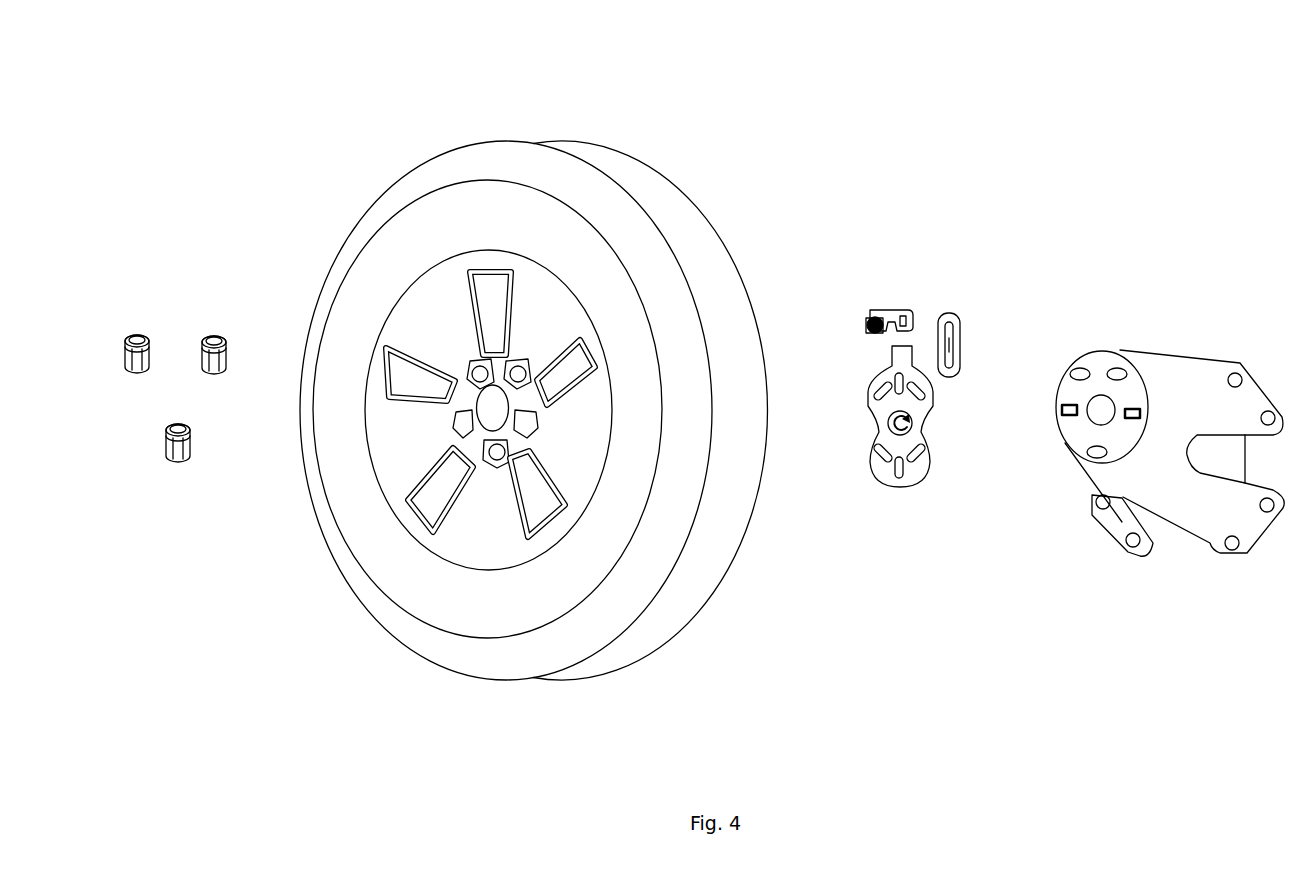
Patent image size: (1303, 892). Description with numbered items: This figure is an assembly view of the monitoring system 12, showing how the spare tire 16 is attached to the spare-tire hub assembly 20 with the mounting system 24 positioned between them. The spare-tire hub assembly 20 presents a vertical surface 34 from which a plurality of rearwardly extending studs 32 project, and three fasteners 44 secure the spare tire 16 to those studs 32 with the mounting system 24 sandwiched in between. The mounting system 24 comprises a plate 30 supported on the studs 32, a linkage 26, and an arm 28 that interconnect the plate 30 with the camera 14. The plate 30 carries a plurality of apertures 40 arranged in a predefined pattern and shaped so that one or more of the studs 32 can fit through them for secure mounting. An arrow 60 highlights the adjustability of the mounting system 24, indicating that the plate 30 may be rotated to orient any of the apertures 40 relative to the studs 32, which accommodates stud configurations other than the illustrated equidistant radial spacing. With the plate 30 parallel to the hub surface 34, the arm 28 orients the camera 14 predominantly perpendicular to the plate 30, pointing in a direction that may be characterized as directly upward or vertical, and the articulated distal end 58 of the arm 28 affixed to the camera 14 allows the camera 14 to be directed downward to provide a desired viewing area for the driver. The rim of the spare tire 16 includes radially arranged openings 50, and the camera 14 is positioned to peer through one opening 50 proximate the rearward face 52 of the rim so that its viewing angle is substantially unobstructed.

The monitoring system 12 is at (961, 154).
The camera 14 is at (872, 332).
The spare tire 16 is at (627, 157).
The spare-tire hub assembly 20 is at (1145, 323).
The mounting system 24 is at (951, 266).
The linkage 26 is at (957, 352).
The arm 28 is at (890, 312).
The plate 30 is at (922, 443).
The studs 32 is at (1093, 452).
The vertical surface 34 is at (1100, 363).
The apertures 40 is at (872, 460).
The fasteners 44 is at (140, 332).
The openings 50 is at (560, 510).
The rearward face 52 is at (472, 301).
The distal end 58 is at (872, 310).
The arrow 60 is at (883, 423).